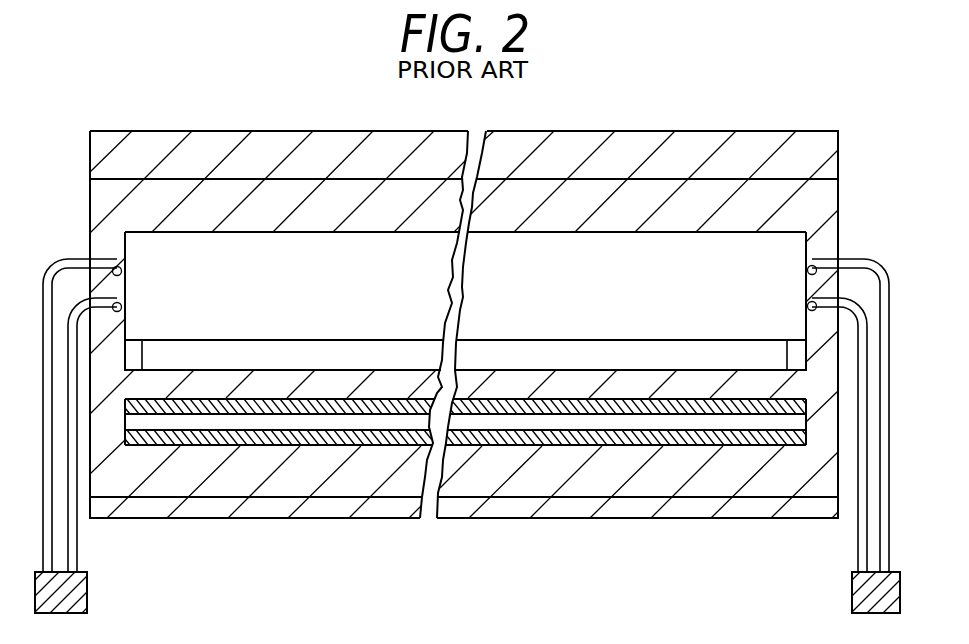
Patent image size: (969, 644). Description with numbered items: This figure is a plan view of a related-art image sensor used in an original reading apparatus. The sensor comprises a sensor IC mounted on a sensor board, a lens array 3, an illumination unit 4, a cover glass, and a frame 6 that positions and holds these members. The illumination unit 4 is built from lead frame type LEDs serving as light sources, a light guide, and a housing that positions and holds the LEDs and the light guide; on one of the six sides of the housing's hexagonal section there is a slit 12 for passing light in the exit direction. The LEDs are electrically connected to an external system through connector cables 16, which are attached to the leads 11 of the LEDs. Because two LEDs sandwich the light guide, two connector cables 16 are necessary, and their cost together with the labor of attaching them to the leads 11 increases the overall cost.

The lens array 3 is at (776, 428).
The illumination unit 4 is at (600, 252).
The frame 6 is at (297, 192).
The leads 11 is at (113, 305).
The slit 12 is at (180, 345).
The connector cables 16 is at (77, 538).